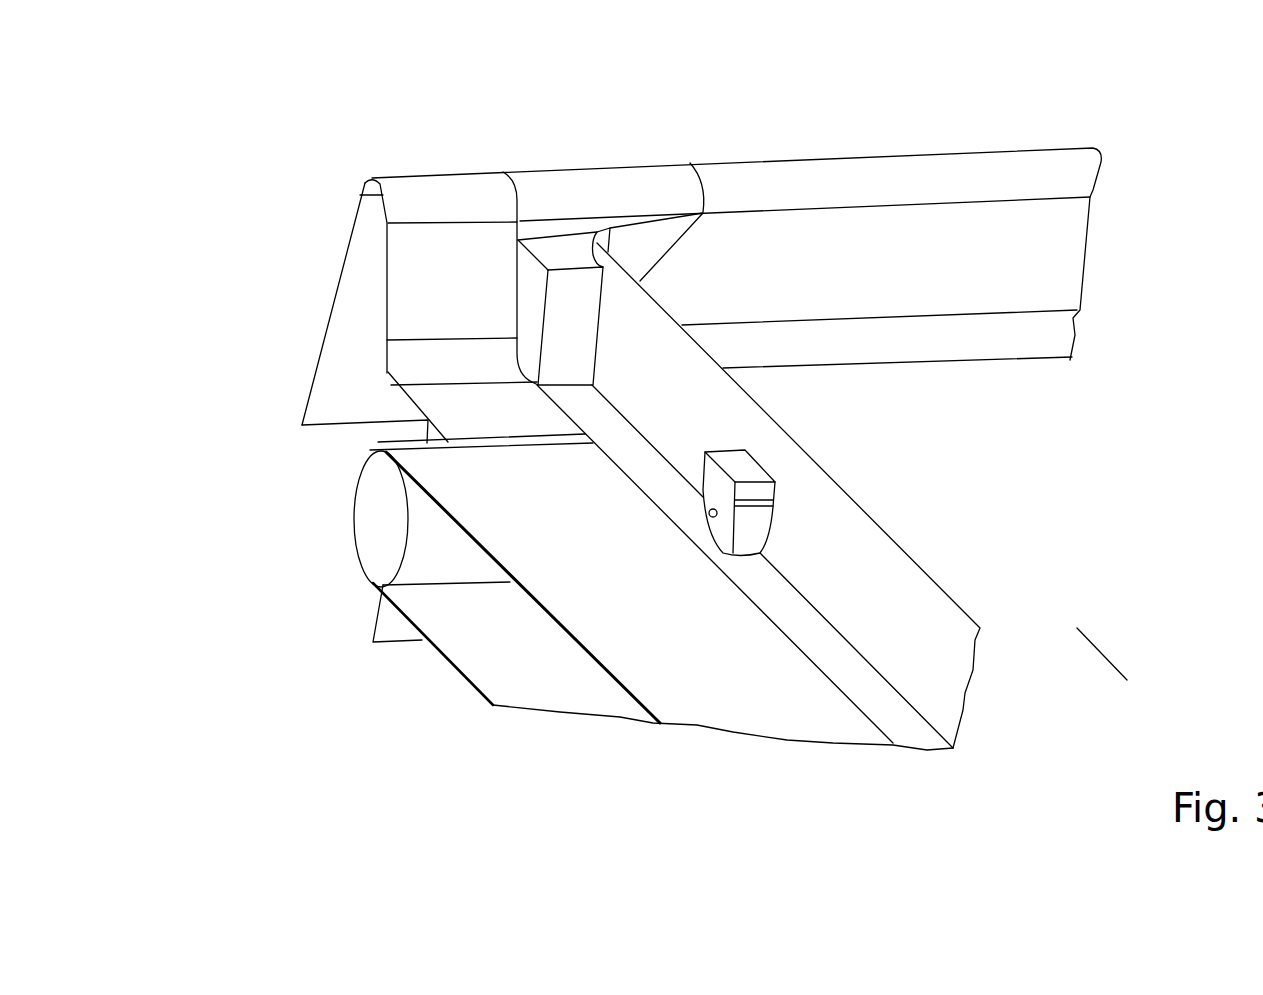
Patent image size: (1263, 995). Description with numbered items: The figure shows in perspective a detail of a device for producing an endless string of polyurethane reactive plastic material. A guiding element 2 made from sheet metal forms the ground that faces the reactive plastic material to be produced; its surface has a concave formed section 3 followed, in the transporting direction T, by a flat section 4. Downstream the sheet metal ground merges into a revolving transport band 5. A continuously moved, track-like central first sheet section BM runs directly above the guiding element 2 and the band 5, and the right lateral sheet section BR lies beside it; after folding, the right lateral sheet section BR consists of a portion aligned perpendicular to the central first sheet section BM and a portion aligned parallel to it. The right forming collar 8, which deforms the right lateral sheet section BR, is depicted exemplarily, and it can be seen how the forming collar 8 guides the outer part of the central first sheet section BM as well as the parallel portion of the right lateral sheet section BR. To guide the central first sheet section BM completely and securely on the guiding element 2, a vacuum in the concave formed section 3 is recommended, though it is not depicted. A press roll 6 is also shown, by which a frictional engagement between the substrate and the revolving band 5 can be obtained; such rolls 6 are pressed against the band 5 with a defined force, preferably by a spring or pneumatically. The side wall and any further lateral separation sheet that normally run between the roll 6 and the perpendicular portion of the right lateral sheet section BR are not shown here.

The guiding element 2 is at (427, 261).
The concave formed section 3 is at (436, 352).
The flat section 4 is at (466, 405).
The revolving transport band 5 is at (502, 537).
The roll 6 is at (742, 467).
The forming collar 8 is at (548, 243).
The central first sheet section BM is at (823, 178).
The right lateral sheet section BR is at (582, 195).
The transporting direction T is at (1110, 649).